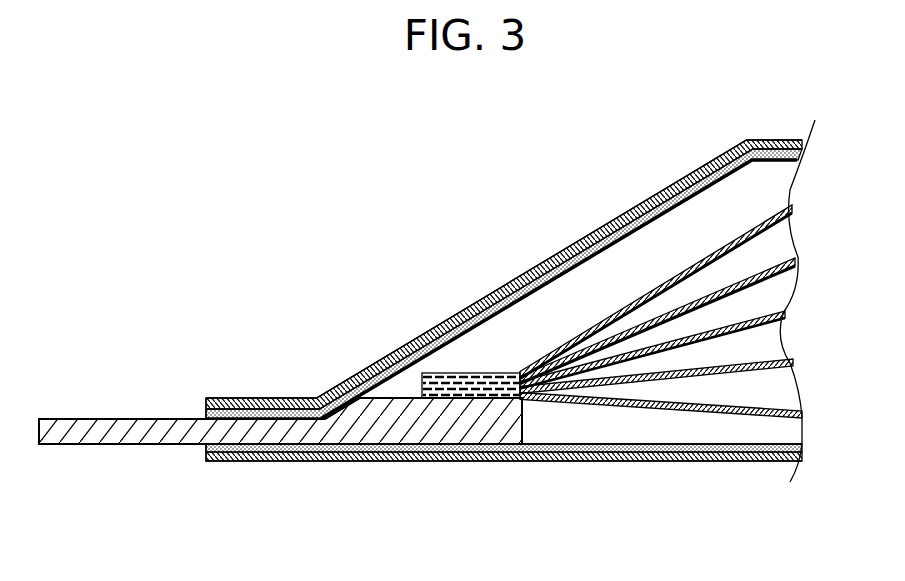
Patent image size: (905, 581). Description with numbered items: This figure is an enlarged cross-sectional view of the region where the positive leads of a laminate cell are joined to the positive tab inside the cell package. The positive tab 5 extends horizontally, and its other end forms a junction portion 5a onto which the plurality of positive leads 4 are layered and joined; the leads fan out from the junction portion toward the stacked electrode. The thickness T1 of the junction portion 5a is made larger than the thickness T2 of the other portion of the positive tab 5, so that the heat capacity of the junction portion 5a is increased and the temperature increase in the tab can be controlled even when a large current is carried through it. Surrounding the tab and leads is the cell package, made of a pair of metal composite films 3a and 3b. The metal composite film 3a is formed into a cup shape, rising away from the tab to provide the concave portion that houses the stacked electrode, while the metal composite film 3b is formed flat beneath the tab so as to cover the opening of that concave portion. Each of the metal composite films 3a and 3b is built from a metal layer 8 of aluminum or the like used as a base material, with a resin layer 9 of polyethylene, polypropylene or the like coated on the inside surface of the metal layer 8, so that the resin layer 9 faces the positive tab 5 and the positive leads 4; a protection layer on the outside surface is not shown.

The metal composite film 3a is at (413, 232).
The metal composite film 3b is at (495, 508).
The positive leads 4 is at (662, 404).
The positive tab 5 is at (118, 418).
The junction portion 5a is at (425, 461).
The metal layer 8 is at (510, 277).
The resin layer 9 is at (455, 310).
The thickness of the junction portion T1 is at (393, 512).
The thickness of the other portion of the positive tab T2 is at (184, 503).